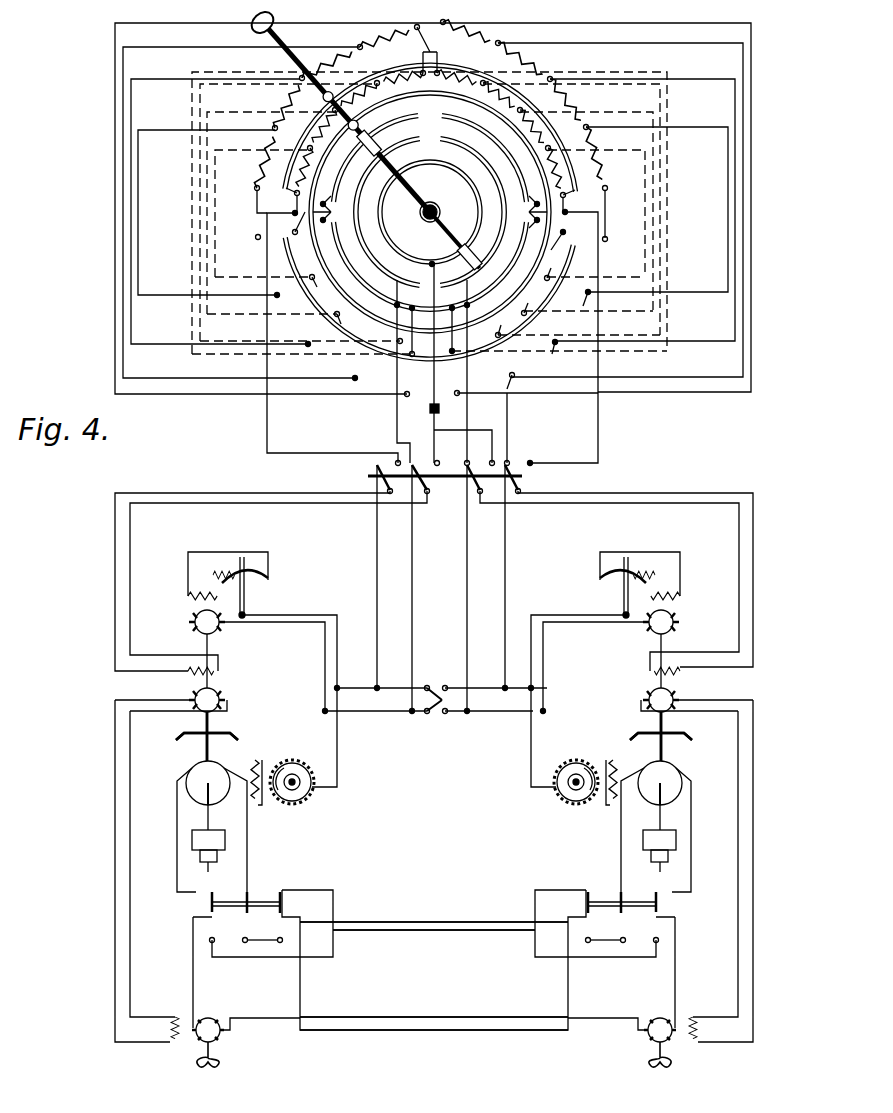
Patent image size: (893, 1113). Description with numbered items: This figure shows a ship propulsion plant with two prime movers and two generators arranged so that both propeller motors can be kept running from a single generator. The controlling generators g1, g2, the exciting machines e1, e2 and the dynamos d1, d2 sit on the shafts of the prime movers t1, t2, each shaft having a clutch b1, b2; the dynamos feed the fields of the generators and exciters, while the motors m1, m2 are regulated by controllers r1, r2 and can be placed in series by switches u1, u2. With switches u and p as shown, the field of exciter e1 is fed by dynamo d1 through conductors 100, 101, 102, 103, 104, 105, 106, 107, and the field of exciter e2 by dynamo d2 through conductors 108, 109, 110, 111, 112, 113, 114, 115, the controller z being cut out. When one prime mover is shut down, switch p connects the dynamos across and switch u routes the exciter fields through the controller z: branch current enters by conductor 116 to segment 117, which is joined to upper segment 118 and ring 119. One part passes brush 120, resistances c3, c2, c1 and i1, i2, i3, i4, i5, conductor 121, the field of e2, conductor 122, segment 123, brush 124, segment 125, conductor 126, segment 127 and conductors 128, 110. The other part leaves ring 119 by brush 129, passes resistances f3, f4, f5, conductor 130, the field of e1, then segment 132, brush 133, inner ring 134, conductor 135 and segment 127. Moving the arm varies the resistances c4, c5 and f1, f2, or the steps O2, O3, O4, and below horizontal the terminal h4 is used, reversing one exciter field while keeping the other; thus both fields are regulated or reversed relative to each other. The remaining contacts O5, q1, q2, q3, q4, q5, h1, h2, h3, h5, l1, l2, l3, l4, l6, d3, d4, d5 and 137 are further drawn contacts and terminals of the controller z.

The conductor 100 is at (272, 622).
The conductor 101 is at (378, 715).
The conductor 102 is at (413, 614).
The conductor 103 is at (261, 503).
The conductor 104 is at (115, 586).
The conductor 105 is at (378, 571).
The conductor 106 is at (342, 687).
The conductor 107 is at (337, 620).
The conductor 108 is at (602, 626).
The conductor 109 is at (512, 682).
The conductor 110 is at (503, 655).
The conductor 111 is at (751, 491).
The conductor 112 is at (738, 555).
The conductor 113 is at (468, 564).
The conductor 114 is at (492, 715).
The conductor 115 is at (523, 614).
The conductor 116 is at (420, 410).
The segment 117 is at (360, 262).
The upper segment 118 is at (407, 43).
The ring 119 is at (430, 207).
The brush 120 is at (328, 90).
The conductor 121 is at (598, 441).
The conductor 122 is at (458, 446).
The segment 123 is at (395, 265).
The brush 124 is at (395, 125).
The segment 125 is at (356, 171).
The conductor 126 is at (300, 248).
The segment 127 is at (405, 395).
The conductor 128 is at (508, 447).
The brush 129 is at (367, 105).
The conductor 130 is at (266, 423).
The segment 132 is at (499, 218).
The brush 133 is at (482, 244).
The inner ring 134 is at (463, 174).
The conductor 135 is at (450, 293).
The contact 137 is at (432, 460).
The controller z is at (442, 206).
The switch u is at (445, 483).
The switch p is at (436, 721).
The resistance c1 is at (410, 19).
The resistance c2 is at (351, 39).
The resistance c3 is at (300, 76).
The resistance c4 is at (264, 123).
The resistance c5 is at (255, 188).
The contact q1 is at (475, 407).
The contact q2 is at (517, 396).
The contact q3 is at (553, 357).
The contact q4 is at (581, 310).
The contact q5 is at (612, 251).
The resistance O2 is at (503, 33).
The resistance O3 is at (551, 78).
The resistance O4 is at (599, 121).
The contact O5 is at (616, 207).
The resistance element f1 is at (415, 89).
The resistance element f2 is at (384, 94).
The resistance element f3 is at (340, 103).
The resistance element f4 is at (317, 159).
The resistance element f5 is at (287, 202).
The resistance i1 is at (445, 87).
The resistance i2 is at (487, 96).
The resistance i3 is at (514, 122).
The resistance i4 is at (545, 162).
The resistance i5 is at (564, 203).
The contact h1 is at (419, 337).
The contact h2 is at (391, 347).
The contact h3 is at (342, 327).
The terminal h4 is at (312, 289).
The contact h5 is at (290, 227).
The contact l1 is at (457, 330).
The contact l2 is at (503, 328).
The contact l3 is at (531, 302).
The contact l4 is at (555, 269).
The contact l6 is at (566, 236).
The dynamo d1 is at (195, 623).
The dynamo d2 is at (673, 623).
The contact d3 is at (307, 342).
The contact d4 is at (275, 296).
The contact d5 is at (256, 237).
The exciting machine e1 is at (196, 696).
The exciting machine e2 is at (672, 696).
The clutch b1 is at (198, 736).
The clutch b2 is at (670, 736).
The controlling generator g1 is at (191, 784).
The controlling generator g2 is at (679, 783).
The prime mover t1 is at (191, 846).
The prime mover t2 is at (680, 844).
The controller r1 is at (292, 765).
The controller r2 is at (576, 765).
The switch u1 is at (252, 923).
The switch u2 is at (619, 923).
The motor m1 is at (211, 1016).
The motor m2 is at (660, 1016).